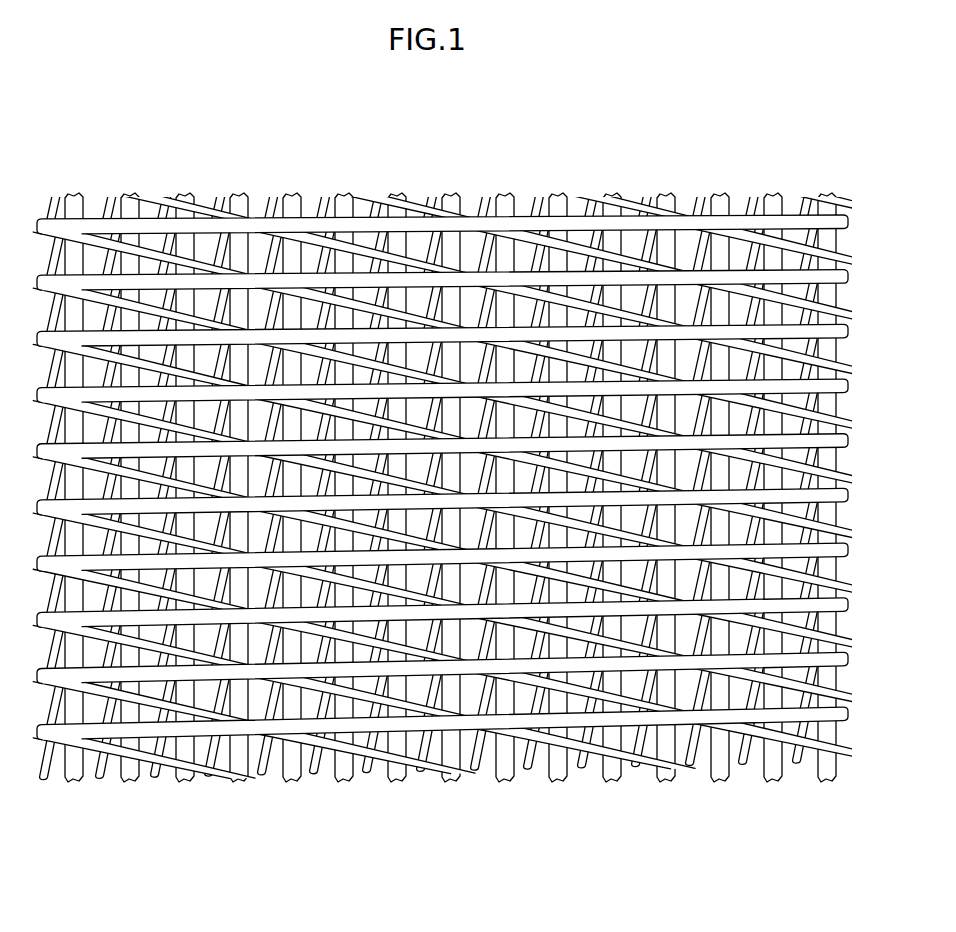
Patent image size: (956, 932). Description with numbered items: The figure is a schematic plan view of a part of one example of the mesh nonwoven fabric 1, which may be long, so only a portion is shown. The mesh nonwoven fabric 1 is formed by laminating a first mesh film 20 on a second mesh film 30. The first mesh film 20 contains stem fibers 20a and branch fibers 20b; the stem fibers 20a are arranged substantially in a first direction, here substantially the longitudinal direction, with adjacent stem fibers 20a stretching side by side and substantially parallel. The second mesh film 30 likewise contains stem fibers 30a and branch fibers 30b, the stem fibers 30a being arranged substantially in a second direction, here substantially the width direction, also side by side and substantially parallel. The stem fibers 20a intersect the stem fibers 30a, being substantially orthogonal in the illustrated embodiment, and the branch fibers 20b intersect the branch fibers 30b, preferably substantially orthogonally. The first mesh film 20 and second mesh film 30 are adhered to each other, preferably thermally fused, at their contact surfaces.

The mesh nonwoven fabric 1 is at (544, 150).
The first mesh film 20 is at (512, 791).
The stem fibers 20a is at (558, 778).
The branch fibers 20b is at (607, 755).
The second mesh film 30 is at (178, 755).
The stem fibers 30a is at (255, 753).
The branch fibers 30b is at (120, 755).